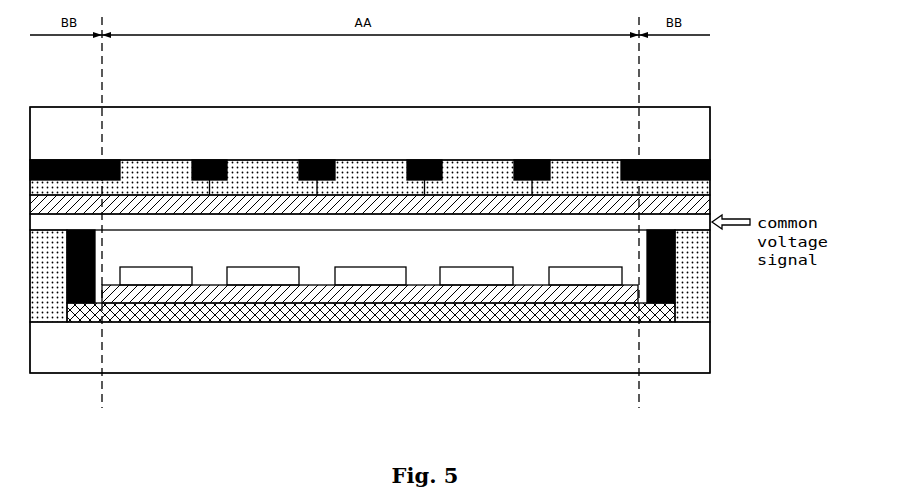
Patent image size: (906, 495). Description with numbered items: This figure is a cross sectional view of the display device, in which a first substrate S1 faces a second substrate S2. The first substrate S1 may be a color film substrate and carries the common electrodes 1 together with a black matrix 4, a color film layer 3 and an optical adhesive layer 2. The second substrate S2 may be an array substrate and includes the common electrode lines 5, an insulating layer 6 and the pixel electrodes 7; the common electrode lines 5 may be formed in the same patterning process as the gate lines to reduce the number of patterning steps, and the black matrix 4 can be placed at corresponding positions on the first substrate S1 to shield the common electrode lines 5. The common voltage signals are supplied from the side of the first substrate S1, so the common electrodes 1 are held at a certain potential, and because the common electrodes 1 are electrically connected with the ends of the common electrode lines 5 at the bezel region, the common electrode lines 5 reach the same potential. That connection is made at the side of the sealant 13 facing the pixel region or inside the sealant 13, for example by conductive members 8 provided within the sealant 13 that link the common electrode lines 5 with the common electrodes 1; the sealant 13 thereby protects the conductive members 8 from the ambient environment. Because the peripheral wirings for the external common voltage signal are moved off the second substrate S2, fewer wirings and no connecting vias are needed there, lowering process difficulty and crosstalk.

The first substrate S1 is at (167, 130).
The second substrate S2 is at (166, 337).
The common electrodes 1 is at (220, 220).
The optical adhesive layer 2 is at (358, 203).
The color film layer 3 is at (472, 178).
The black matrix 4 is at (535, 160).
The common electrode lines 5 is at (292, 310).
The insulating layer 6 is at (413, 293).
The pixel electrodes 7 is at (477, 277).
The conductive members 8 is at (84, 300).
The sealant 13 is at (48, 267).